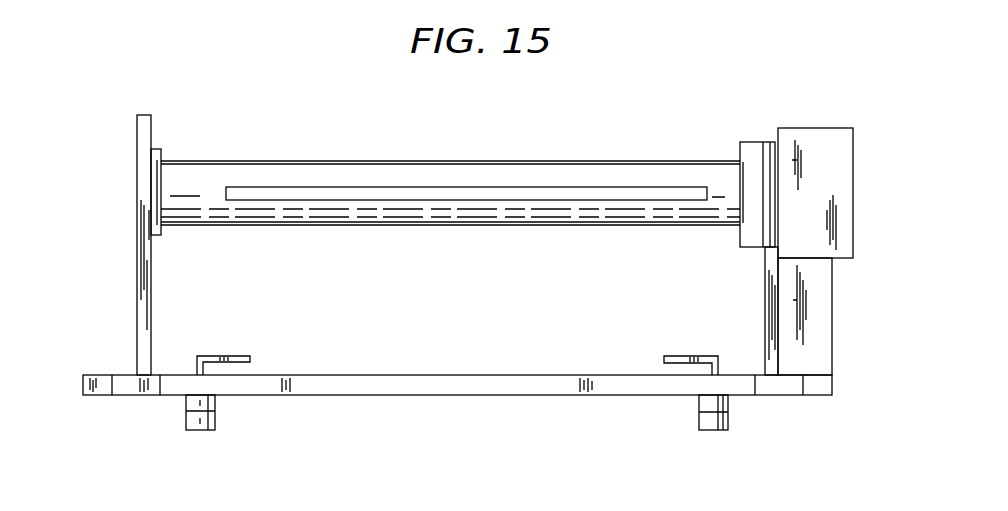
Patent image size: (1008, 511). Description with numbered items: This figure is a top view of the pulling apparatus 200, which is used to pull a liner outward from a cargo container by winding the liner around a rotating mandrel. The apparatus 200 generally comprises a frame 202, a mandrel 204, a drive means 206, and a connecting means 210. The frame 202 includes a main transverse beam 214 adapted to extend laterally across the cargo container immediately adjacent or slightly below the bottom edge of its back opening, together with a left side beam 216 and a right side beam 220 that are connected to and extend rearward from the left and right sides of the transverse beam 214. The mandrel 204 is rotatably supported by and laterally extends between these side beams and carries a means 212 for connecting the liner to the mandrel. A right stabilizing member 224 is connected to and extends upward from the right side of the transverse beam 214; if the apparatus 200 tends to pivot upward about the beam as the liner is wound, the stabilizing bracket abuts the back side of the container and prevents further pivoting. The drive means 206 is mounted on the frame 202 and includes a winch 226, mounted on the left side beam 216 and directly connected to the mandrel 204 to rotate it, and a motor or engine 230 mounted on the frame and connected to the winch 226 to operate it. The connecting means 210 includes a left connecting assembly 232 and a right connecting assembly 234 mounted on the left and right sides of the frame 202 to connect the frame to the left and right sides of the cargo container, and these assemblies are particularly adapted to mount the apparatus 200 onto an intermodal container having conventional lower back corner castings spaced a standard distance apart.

The pulling apparatus 200 is at (296, 144).
The frame 202 is at (116, 244).
The mandrel 204 is at (492, 225).
The drive means 206 is at (823, 114).
The connecting means 210 is at (190, 450).
The means to connect liner to mandrel 212 is at (320, 203).
The main transverse beam 214 is at (440, 382).
The left side beam 216 is at (765, 292).
The right side beam 220 is at (145, 338).
The right stabilizing member 224 is at (135, 382).
The winch 226 is at (755, 236).
The motor or engine 230 is at (817, 190).
The left connecting assembly 232 is at (698, 413).
The right connecting assembly 234 is at (215, 408).